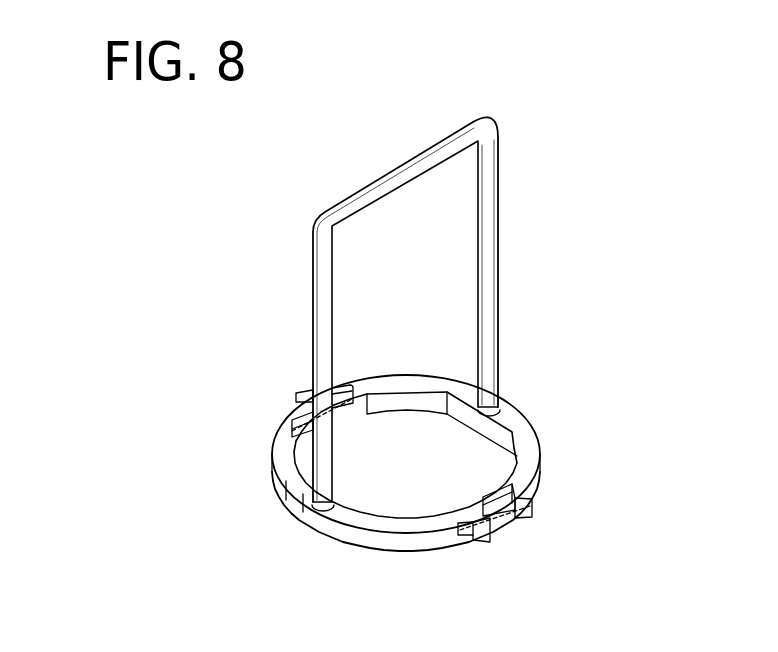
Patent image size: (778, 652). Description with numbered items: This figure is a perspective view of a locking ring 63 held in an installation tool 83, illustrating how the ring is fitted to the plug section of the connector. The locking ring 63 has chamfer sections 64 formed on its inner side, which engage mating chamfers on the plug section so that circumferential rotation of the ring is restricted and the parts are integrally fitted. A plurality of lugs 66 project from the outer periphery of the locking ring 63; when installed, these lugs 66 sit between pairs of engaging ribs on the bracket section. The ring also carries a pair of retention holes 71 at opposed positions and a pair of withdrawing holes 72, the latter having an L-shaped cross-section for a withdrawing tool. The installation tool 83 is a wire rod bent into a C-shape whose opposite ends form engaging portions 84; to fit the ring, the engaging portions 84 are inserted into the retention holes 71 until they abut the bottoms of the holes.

The locking ring 63 is at (586, 394).
The chamfer section 64 is at (362, 414).
The lug 66 is at (303, 400).
The retention hole 71 is at (498, 391).
The withdrawing hole 72 is at (346, 390).
The installation tool 83 is at (490, 200).
The engaging portion 84 is at (478, 396).